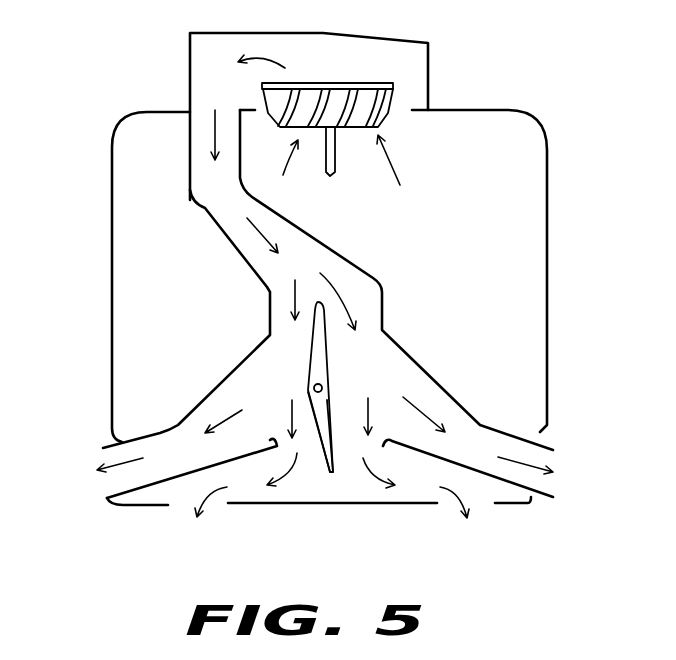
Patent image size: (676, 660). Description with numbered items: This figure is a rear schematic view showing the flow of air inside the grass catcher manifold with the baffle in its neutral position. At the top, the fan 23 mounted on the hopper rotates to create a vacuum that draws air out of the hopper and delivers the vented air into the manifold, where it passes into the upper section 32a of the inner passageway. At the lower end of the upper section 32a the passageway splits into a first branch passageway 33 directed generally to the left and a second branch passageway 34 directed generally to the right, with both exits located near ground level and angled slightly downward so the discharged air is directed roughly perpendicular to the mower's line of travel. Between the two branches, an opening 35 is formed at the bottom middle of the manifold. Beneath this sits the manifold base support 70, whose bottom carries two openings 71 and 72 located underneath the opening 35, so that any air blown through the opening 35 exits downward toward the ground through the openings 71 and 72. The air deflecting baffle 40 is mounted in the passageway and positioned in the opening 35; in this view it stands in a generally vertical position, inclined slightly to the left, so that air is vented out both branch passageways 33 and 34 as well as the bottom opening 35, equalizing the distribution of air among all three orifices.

The fan 23 is at (363, 85).
The upper section of inner passageway 32a is at (197, 190).
The first branch passageway 33 is at (157, 440).
The second branch passageway 34 is at (518, 448).
The opening 35 is at (318, 470).
The air deflecting baffle 40 is at (330, 365).
The manifold base support 70 is at (283, 503).
The opening 71 is at (487, 498).
The opening 72 is at (182, 502).